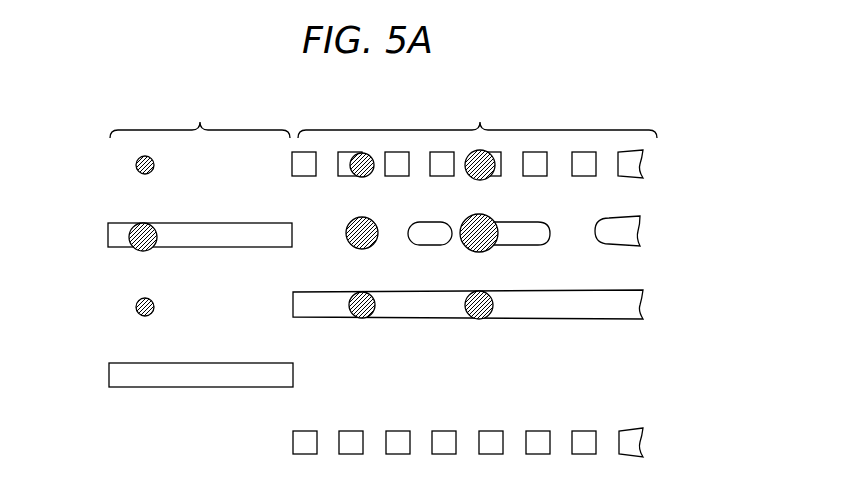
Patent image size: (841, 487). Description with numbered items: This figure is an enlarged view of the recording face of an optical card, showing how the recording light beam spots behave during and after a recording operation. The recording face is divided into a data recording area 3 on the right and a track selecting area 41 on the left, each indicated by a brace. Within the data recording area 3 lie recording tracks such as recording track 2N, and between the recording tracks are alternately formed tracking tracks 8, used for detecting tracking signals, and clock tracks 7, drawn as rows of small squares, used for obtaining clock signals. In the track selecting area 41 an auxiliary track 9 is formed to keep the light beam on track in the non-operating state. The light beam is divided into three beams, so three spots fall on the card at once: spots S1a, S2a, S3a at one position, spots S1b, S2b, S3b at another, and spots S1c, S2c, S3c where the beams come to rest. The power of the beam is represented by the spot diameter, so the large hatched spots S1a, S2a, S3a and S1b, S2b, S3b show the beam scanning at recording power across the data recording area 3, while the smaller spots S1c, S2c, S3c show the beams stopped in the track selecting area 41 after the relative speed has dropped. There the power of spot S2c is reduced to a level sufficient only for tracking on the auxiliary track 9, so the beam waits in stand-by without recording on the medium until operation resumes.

The track selecting area 41 is at (202, 122).
The data recording area 3 is at (482, 122).
The clock tracks 7 is at (663, 140).
The recording track 2N is at (663, 205).
The tracking tracks 8 is at (663, 277).
The auxiliary track 9 is at (108, 243).
The beam spot S1a is at (484, 180).
The beam spot S1b is at (366, 177).
The beam spot S1c is at (151, 172).
The beam spot S2a is at (490, 250).
The beam spot S2b is at (368, 248).
The beam spot S2c is at (150, 249).
The beam spot S3a is at (484, 319).
The beam spot S3b is at (366, 318).
The beam spot S3c is at (151, 314).